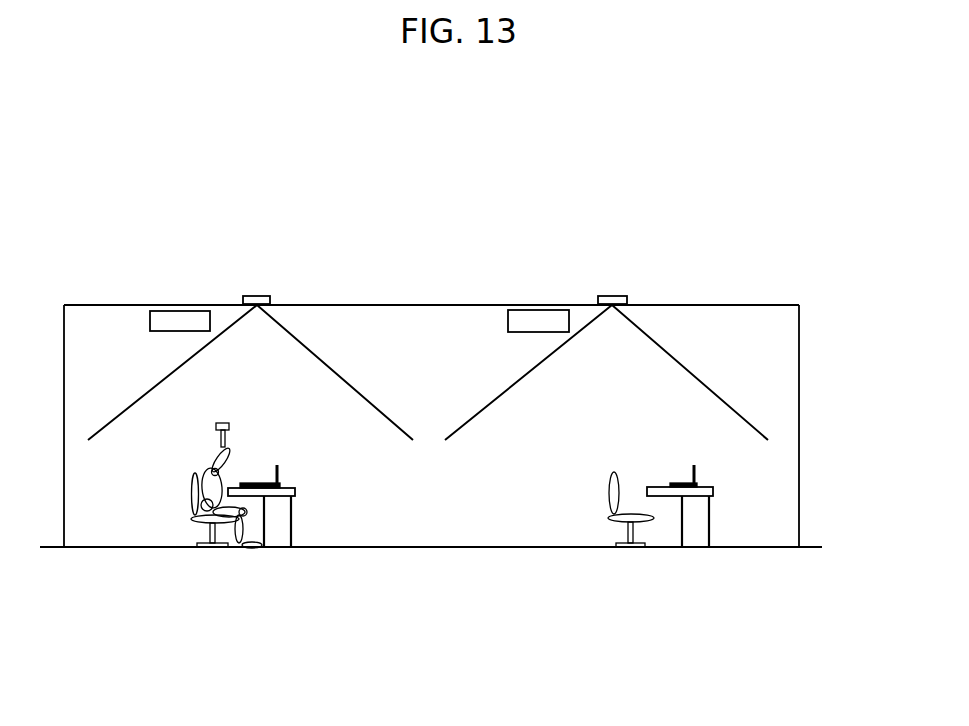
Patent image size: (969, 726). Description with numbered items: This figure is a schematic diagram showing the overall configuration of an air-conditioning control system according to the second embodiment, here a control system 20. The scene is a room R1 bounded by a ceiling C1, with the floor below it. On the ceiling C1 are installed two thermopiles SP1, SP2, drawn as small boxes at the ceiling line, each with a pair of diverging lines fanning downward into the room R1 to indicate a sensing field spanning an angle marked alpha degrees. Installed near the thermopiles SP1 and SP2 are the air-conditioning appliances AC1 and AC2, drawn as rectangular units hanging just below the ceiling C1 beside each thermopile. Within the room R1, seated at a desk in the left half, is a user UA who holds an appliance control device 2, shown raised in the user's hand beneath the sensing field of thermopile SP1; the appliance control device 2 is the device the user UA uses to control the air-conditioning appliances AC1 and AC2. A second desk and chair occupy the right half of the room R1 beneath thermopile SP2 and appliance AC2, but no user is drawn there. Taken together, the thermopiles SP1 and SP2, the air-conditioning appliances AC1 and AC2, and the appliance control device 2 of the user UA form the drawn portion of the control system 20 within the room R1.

The control system 20 is at (700, 202).
The appliance control device 2 is at (220, 420).
The air-conditioning appliance AC1 is at (183, 311).
The air-conditioning appliance AC2 is at (542, 310).
The thermopile SP1 is at (245, 297).
The thermopile SP2 is at (605, 296).
The ceiling C1 is at (763, 306).
The room R1 is at (789, 510).
The user UA is at (253, 549).